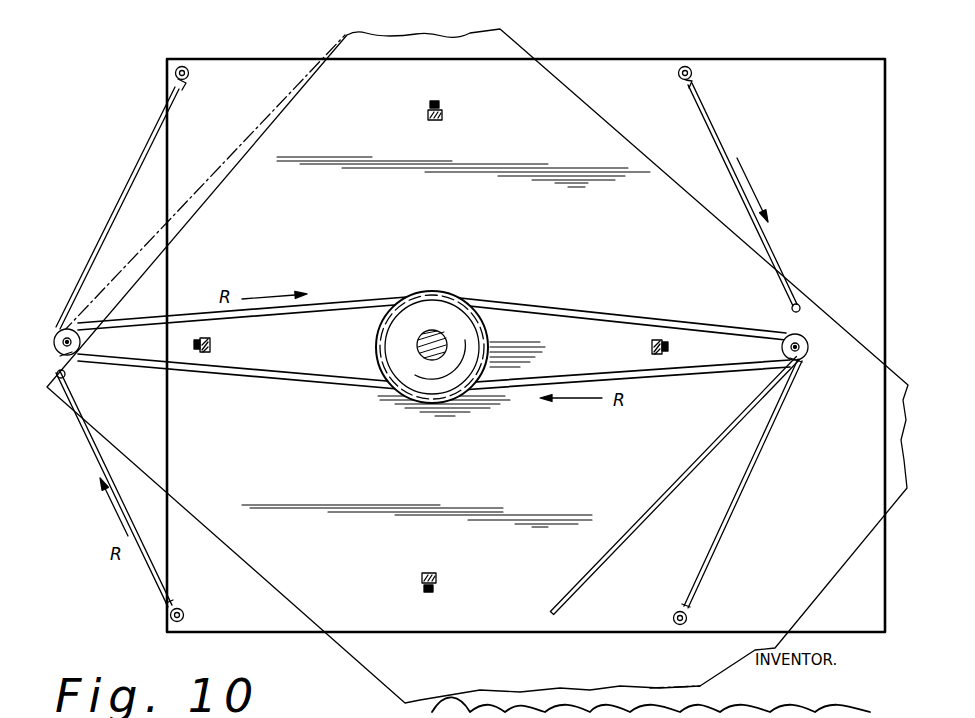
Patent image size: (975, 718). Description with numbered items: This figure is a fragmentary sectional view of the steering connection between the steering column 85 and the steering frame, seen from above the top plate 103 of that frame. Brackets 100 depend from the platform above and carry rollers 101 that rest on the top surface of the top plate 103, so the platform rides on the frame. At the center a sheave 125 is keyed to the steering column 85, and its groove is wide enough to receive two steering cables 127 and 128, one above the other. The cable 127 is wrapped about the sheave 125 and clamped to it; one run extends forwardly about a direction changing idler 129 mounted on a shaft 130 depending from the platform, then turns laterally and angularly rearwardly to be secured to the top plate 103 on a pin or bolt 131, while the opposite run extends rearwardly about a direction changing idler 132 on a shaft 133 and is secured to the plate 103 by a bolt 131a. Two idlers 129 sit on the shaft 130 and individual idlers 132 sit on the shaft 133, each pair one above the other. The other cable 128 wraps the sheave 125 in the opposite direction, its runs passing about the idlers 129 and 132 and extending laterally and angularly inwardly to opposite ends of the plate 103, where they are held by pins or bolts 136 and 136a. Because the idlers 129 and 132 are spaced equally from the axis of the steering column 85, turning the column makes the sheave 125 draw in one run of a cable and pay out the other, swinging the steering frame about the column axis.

The steering column 85 is at (450, 318).
The brackets 100 is at (430, 114).
The rollers 101 is at (430, 104).
The top plate 103 is at (837, 72).
The sheave 125 is at (424, 292).
The cable 127 is at (748, 218).
The cable 128 is at (365, 268).
The direction changing idler 129 is at (810, 350).
The shaft 130 is at (791, 350).
The pin or bolt 131 is at (692, 76).
The bolt 131a is at (190, 76).
The direction changing idler 132 is at (80, 350).
The shaft 133 is at (60, 335).
The pin or bolt 136 is at (170, 614).
The pin or bolt 136a is at (692, 610).